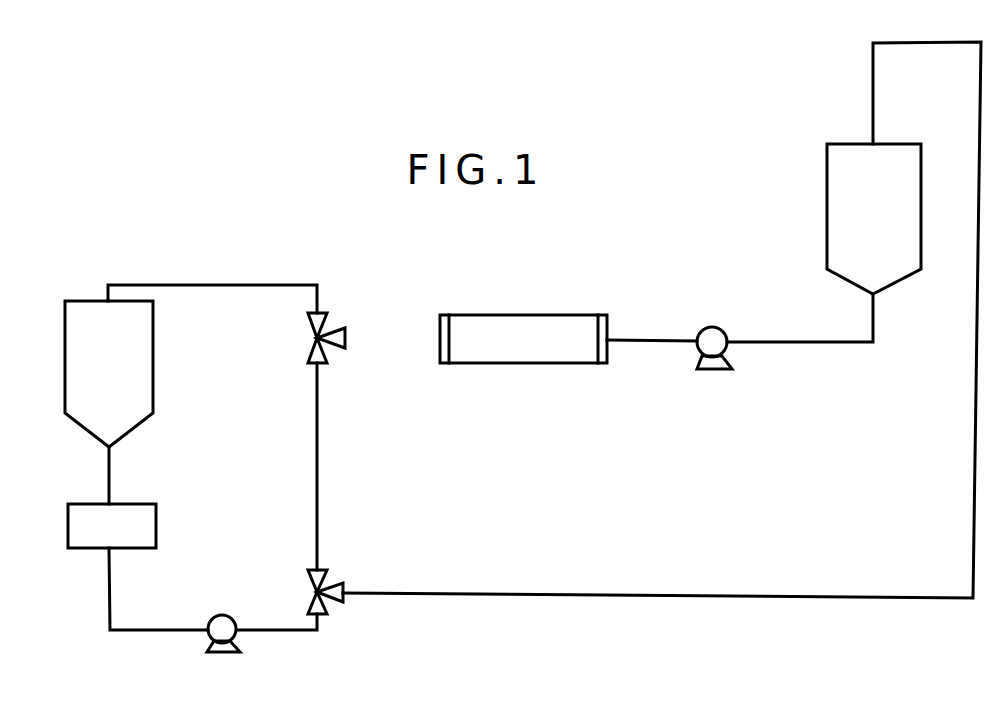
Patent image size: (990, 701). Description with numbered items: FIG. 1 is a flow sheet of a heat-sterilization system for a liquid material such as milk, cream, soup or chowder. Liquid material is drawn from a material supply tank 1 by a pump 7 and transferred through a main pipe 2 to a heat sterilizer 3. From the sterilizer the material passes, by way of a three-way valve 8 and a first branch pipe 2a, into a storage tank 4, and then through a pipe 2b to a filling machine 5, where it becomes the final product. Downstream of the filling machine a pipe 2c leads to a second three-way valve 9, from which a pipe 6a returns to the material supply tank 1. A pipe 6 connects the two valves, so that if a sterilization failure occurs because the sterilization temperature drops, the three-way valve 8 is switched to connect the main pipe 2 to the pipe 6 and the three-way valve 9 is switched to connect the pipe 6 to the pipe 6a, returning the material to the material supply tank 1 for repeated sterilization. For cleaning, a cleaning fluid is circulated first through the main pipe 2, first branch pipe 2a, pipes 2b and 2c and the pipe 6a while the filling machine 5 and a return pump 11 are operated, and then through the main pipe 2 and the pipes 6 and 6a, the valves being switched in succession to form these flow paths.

The material supply tank 1 is at (841, 192).
The main pipe 2 is at (650, 344).
The first branch pipe 2a is at (224, 284).
The pipe 2b is at (111, 465).
The pipe 2c is at (302, 633).
The heat sterilizer 3 is at (557, 316).
The storage tank 4 is at (146, 348).
The filling machine 5 is at (157, 523).
The pipe 6 is at (319, 462).
The pipe 6a is at (670, 596).
The pump 7 is at (716, 328).
The three-way valve 8 is at (333, 331).
The three-way valve 9 is at (330, 586).
The return pump 11 is at (229, 615).